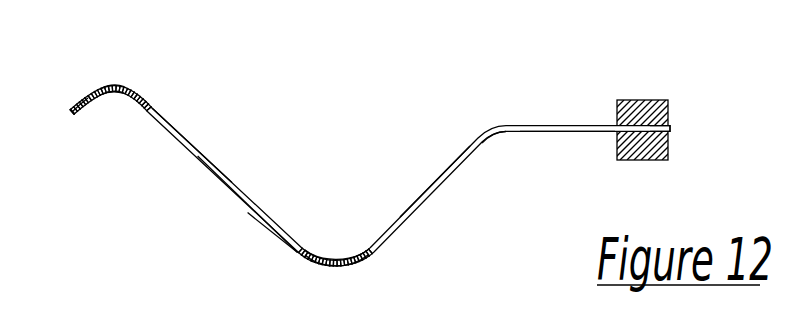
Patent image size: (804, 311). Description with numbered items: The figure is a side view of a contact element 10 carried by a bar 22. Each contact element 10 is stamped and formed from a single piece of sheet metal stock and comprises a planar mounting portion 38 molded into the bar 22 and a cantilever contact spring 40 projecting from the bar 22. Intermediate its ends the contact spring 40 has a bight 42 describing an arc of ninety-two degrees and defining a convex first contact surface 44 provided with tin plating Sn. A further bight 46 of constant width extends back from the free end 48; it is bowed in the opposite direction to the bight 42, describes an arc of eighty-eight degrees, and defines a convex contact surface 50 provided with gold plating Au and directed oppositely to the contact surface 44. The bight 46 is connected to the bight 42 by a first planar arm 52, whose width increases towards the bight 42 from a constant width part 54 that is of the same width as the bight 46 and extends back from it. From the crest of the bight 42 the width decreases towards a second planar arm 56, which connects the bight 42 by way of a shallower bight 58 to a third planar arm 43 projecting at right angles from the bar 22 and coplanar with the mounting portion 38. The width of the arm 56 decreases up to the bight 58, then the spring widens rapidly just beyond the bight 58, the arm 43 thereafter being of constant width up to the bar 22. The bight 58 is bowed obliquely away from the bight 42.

The contact element 10 is at (334, 120).
The bar 22 is at (643, 161).
The planar mounting portion 38 is at (670, 130).
The cantilever contact spring 40 is at (259, 262).
The bight 42 is at (336, 257).
The third planar arm 43 is at (588, 133).
The convex first contact surface 44 is at (336, 264).
The further bight 46 is at (107, 97).
The free end 48 is at (72, 111).
The convex contact surface 50 is at (112, 88).
The first planar arm 52 is at (213, 165).
The constant width part 54 is at (165, 121).
The second planar arm 56 is at (451, 169).
The shallower bight 58 is at (494, 135).
The gold plating Au is at (101, 91).
The tin plating Sn is at (366, 256).